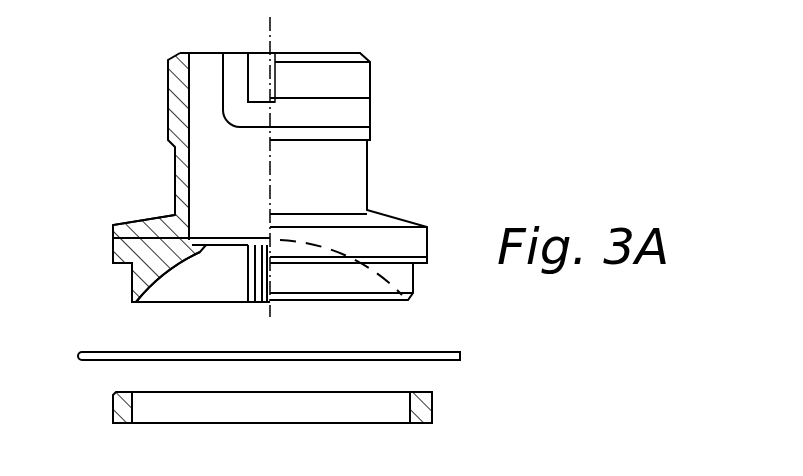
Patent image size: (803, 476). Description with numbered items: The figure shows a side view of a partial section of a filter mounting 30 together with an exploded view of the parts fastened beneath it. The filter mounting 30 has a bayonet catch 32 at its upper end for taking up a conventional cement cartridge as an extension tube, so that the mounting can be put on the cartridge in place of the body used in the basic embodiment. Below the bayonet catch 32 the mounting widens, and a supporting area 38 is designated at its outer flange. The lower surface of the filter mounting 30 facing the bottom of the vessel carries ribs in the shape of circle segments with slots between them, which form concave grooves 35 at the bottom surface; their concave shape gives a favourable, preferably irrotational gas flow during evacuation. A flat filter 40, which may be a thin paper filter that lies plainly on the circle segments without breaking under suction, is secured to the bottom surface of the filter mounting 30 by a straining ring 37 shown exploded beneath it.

The filter mounting 30 is at (383, 141).
The bayonet catch 32 is at (277, 106).
The concave grooves 35 is at (171, 265).
The supporting area 38 is at (130, 276).
The filter 40 is at (460, 357).
The straining ring 37 is at (418, 423).